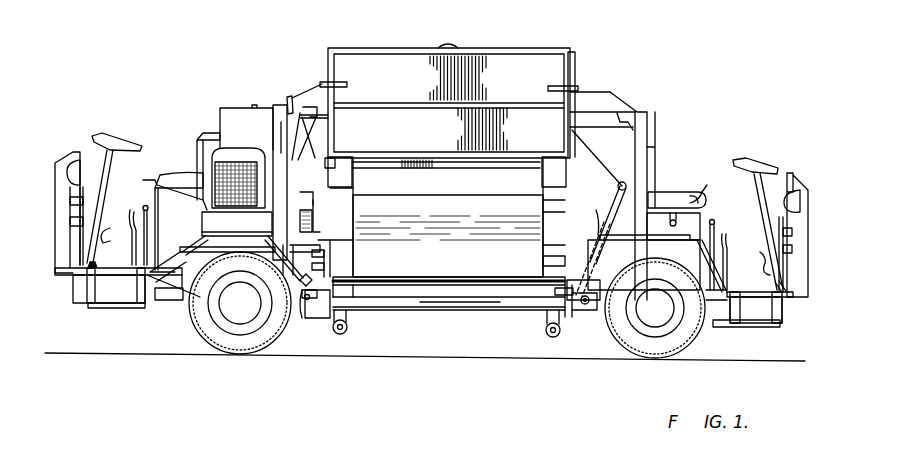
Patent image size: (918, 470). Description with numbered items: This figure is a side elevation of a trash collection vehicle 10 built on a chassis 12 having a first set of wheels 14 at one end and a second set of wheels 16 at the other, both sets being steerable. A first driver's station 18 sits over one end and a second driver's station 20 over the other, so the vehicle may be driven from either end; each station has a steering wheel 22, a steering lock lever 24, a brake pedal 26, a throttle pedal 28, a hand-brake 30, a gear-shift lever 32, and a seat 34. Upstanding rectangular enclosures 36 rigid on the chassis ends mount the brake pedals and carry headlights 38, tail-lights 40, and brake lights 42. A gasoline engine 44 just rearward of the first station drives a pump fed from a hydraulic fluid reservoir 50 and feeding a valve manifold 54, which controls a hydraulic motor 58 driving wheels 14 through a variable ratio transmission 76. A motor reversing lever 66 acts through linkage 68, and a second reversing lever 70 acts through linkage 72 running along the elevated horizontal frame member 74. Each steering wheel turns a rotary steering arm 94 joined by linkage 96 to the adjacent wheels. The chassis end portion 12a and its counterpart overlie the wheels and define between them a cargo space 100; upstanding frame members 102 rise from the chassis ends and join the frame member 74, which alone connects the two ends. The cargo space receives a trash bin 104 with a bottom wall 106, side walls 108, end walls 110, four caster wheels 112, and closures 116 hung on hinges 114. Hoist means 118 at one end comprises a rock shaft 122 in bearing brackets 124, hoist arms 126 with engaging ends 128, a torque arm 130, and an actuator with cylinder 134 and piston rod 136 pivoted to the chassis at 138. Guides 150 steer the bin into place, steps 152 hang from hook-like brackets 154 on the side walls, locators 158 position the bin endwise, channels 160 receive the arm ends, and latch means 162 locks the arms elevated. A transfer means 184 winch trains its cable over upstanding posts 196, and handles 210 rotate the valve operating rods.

The trash collection vehicle 10 is at (653, 68).
The chassis 12 is at (181, 315).
The end portion of the chassis 12a is at (237, 224).
The first set of wheels 14 is at (212, 345).
The second set of wheels 16 is at (690, 355).
The first driver's station 18 is at (160, 122).
The second driver's station 20 is at (702, 135).
The steering wheel 22 is at (95, 135).
The steering lock lever 24 is at (82, 197).
The brake pedal 26 is at (112, 255).
The throttle pedal 28 is at (95, 266).
The hand-brake 30 is at (133, 212).
The gear-shift lever 32 is at (150, 210).
The seat 34 is at (175, 172).
The upstanding rectangular enclosure 36 is at (56, 165).
The headlights 38 is at (67, 176).
The tail-lights 40 is at (70, 200).
The brake lights 42 is at (70, 221).
The gasoline engine 44 is at (248, 192).
The hydraulic fluid reservoir 50 is at (228, 107).
The valve manifold 54 is at (328, 160).
The hydraulic motor 58 is at (95, 303).
The motor reversing lever 66 is at (145, 178).
The linkage 68 is at (338, 186).
The second motor reversing lever 70 is at (710, 190).
The linkage 72 is at (638, 126).
The elevated horizontal frame member 74 is at (590, 95).
The variable ratio transmission 76 is at (145, 310).
The rotary steering arm 94 is at (786, 323).
The linkage 96 is at (756, 330).
The cargo space 100 is at (598, 140).
The upstanding frame members 102 is at (284, 130).
The trash bin 104 is at (412, 312).
The bottom wall 106 is at (440, 312).
The side walls 108 is at (452, 255).
The end walls 110 is at (545, 204).
The caster wheels 112 is at (350, 333).
The hinges 114 is at (450, 155).
The trash bin closures 116 is at (522, 62).
The hoist means 118 is at (588, 355).
The rock shaft 122 is at (305, 320).
The bearing brackets 124 is at (346, 288).
The hoist arms 126 is at (320, 330).
The trash-bin engaging ends 128 is at (335, 332).
The torque arm 130 is at (655, 308).
The cylinder 134 is at (608, 205).
The piston rod 136 is at (622, 252).
The pivotal attachment 138 is at (622, 182).
The guides 150 is at (340, 257).
The steps 152 is at (448, 277).
The hook-like brackets 154 is at (354, 166).
The locators 158 is at (340, 271).
The channels 160 is at (482, 312).
The latch means 162 is at (345, 223).
The trash bin transfer means 184 is at (318, 206).
The upstanding posts 196 is at (354, 243).
The handles 210 is at (290, 96).